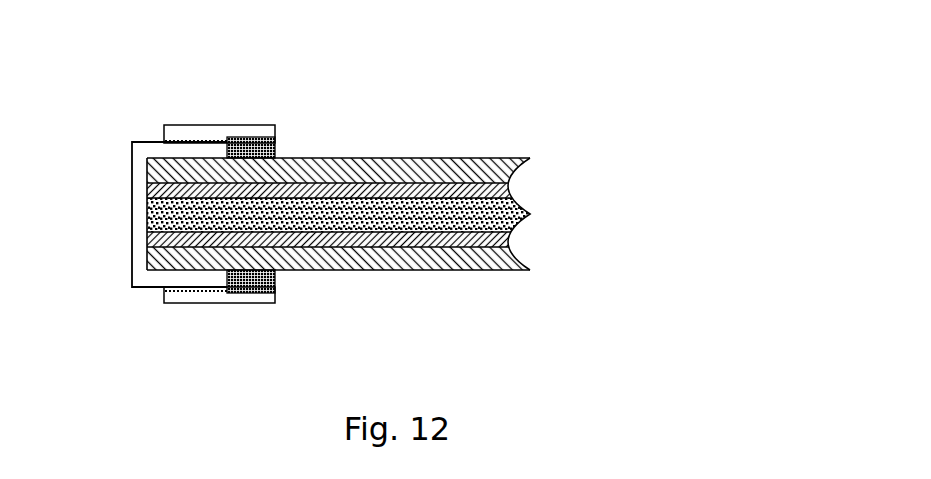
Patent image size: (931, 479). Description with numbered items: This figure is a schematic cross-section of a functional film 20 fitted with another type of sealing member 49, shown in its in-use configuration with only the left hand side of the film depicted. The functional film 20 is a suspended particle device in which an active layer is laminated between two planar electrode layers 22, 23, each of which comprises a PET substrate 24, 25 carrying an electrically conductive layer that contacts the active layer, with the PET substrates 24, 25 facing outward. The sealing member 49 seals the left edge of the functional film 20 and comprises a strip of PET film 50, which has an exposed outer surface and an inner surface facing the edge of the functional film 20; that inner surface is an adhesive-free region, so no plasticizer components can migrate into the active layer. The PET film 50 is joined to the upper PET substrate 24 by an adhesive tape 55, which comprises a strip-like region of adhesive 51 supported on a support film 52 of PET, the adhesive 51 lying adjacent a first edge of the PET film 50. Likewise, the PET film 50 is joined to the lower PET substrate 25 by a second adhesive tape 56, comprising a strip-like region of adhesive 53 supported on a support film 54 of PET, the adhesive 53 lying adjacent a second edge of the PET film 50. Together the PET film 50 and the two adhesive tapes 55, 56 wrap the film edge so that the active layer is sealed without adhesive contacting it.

The functional film 20 is at (363, 208).
The planar electrode layer 22 is at (548, 160).
The planar electrode layer 23 is at (548, 232).
The PET substrate 24 is at (338, 158).
The PET substrate 25 is at (352, 271).
The sealing member 49 is at (184, 218).
The PET film 50 is at (136, 232).
The strip-like region of adhesive 51 is at (276, 147).
The support film 52 is at (222, 132).
The strip-like region of adhesive 53 is at (276, 283).
The support film 54 is at (166, 300).
The adhesive tape 55 is at (240, 86).
The adhesive tape 56 is at (169, 346).